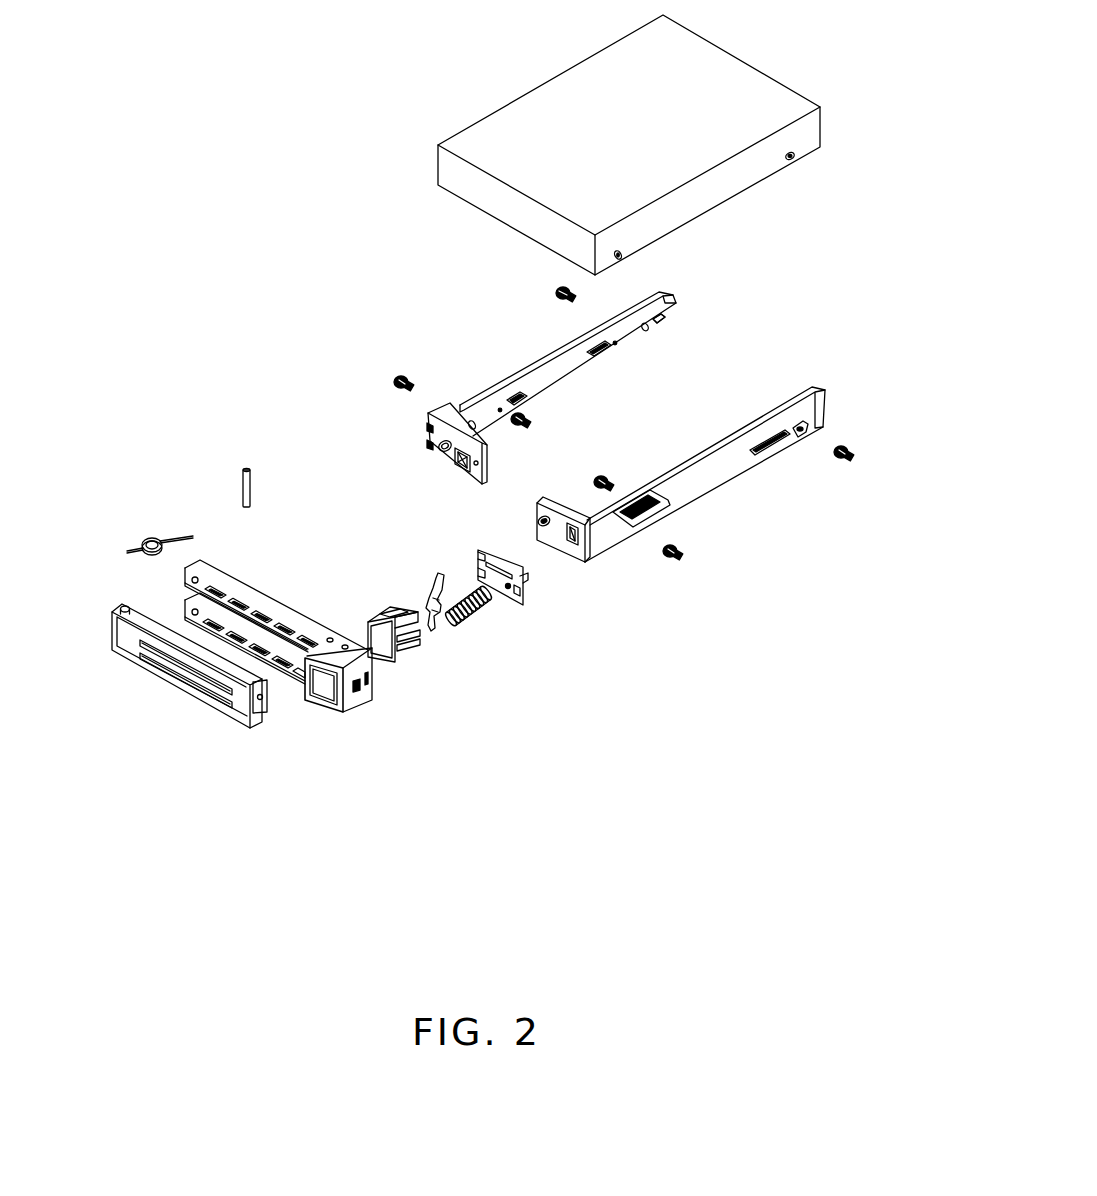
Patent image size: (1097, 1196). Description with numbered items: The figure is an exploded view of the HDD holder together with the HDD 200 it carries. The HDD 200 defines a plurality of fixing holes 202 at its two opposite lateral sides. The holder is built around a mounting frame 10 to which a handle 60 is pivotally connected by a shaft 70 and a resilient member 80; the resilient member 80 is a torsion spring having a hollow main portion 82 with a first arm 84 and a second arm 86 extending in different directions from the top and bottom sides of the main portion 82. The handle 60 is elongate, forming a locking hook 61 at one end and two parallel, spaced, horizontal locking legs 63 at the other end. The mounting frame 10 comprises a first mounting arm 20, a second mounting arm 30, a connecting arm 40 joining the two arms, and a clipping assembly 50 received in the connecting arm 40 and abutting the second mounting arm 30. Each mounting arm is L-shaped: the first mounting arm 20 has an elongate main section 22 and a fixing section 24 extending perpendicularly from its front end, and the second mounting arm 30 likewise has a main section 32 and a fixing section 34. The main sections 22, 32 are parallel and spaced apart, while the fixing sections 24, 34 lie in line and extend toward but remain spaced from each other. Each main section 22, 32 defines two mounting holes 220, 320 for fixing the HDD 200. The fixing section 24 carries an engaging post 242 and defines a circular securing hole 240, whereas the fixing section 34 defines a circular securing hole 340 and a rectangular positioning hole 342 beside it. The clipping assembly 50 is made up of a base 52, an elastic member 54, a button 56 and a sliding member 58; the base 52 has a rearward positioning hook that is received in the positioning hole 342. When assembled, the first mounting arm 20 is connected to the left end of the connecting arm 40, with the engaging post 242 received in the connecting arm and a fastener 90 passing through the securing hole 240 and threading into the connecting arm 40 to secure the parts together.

The mounting frame 10 is at (375, 440).
The first mounting arm 20 is at (561, 388).
The main section 22 is at (602, 364).
The fixing section 24 is at (492, 411).
The second mounting arm 30 is at (593, 495).
The main section 32 is at (707, 474).
The fixing section 34 is at (550, 550).
The connecting arm 40 is at (320, 640).
The clipping assembly 50 is at (425, 588).
The base 52 is at (490, 570).
The elastic member 54 is at (473, 593).
The button 56 is at (387, 613).
The sliding member 58 is at (404, 594).
The handle 60 is at (208, 660).
The locking hook 61 is at (268, 699).
The locking legs 63 is at (124, 609).
The shaft 70 is at (245, 468).
The resilient member 80 is at (161, 510).
The main portion 82 is at (158, 535).
The first arm 84 is at (180, 535).
The second arm 86 is at (140, 542).
The fastener 90 is at (557, 289).
The HDD 200 is at (651, 144).
The fixing holes 202 is at (793, 160).
The mounting holes 220 is at (651, 334).
The securing hole 240 is at (473, 457).
The engaging post 242 is at (476, 464).
The mounting holes 320 is at (798, 437).
The securing hole 340 is at (542, 525).
The positioning hole 342 is at (569, 563).